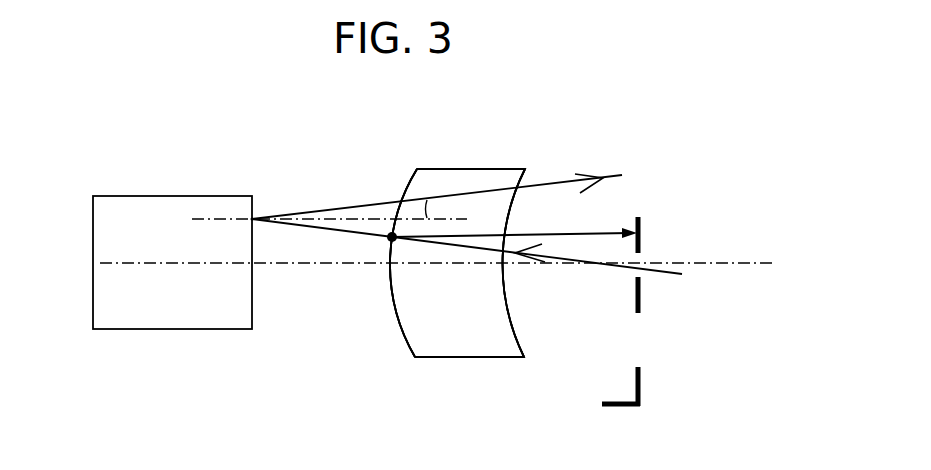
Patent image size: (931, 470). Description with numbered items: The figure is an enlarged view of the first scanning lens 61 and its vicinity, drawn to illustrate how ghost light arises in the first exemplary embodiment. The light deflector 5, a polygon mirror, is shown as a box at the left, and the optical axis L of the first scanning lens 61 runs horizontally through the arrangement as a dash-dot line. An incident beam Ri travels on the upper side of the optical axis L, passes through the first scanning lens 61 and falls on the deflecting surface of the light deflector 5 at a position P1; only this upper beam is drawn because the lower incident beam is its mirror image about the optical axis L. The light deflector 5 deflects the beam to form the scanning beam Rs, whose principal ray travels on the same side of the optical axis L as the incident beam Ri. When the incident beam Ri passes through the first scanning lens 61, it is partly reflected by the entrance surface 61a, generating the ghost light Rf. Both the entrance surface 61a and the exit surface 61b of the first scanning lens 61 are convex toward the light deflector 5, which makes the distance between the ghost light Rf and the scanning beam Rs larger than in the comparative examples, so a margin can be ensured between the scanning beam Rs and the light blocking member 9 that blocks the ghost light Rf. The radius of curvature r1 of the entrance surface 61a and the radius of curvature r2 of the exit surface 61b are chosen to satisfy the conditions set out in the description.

The light deflector 5 is at (125, 207).
The first scanning lens 61 is at (455, 175).
The entrance surface 61a is at (407, 345).
The exit surface 61b is at (518, 340).
The light blocking member 9 is at (642, 238).
The position on the light deflector P1 is at (252, 218).
The optical axis L is at (307, 265).
The radius of curvature of the entrance surface r1 is at (405, 187).
The radius of curvature of the exit surface r2 is at (515, 208).
The scanning beam Rs is at (615, 177).
The ghost light Rf is at (612, 232).
The incident beam Ri is at (560, 270).